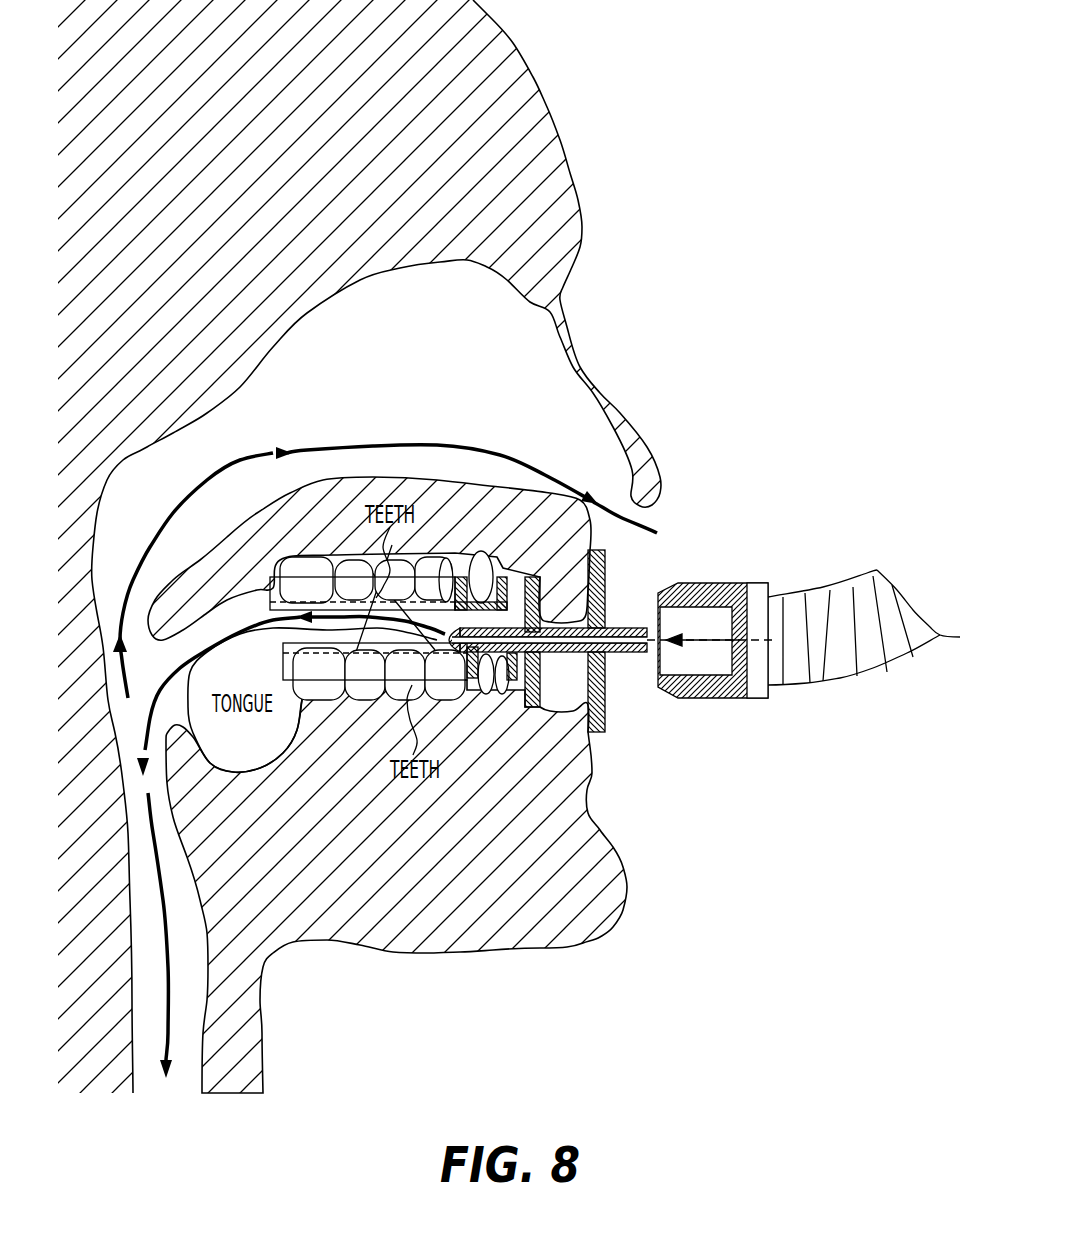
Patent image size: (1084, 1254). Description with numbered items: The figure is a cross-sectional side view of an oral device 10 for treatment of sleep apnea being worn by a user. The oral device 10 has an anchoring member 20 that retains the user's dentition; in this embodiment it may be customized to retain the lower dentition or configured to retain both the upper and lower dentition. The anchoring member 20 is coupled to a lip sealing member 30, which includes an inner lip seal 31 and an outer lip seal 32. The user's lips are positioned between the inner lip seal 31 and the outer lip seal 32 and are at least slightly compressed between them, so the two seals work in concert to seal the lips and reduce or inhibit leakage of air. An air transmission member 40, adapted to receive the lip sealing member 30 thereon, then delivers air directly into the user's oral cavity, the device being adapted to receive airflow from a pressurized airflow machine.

The oral device 10 is at (615, 621).
The anchoring member 20 is at (507, 542).
The lip sealing member 30 is at (632, 714).
The inner lip seal 31 is at (528, 703).
The outer lip seal 32 is at (603, 730).
The air transmission member 40 is at (667, 583).